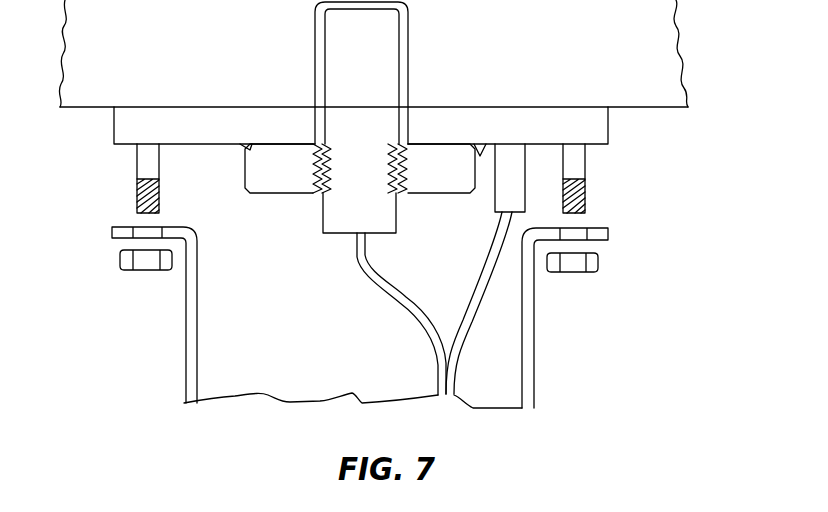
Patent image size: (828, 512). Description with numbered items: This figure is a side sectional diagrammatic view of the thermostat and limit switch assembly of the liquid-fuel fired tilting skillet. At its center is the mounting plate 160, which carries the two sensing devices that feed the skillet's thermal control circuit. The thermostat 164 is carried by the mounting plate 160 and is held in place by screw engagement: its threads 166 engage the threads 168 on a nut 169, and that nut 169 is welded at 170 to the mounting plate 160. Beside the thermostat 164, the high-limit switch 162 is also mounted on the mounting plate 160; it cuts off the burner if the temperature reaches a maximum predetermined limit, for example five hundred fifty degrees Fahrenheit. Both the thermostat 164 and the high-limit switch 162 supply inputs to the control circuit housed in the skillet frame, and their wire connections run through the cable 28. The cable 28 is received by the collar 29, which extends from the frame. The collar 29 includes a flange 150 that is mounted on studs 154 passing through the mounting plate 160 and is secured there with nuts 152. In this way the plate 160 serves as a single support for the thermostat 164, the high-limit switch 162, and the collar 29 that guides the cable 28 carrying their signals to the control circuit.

The cable 28 is at (437, 382).
The collar 29 is at (535, 383).
The flange 150 is at (610, 232).
The nuts 152 is at (118, 257).
The studs 154 is at (135, 186).
The mounting plate 160 is at (608, 126).
The high-limit switch 162 is at (512, 155).
The thermostat 164 is at (378, 45).
The threads 166 is at (347, 185).
The threads 168 is at (312, 173).
The nut 169 is at (245, 185).
The weld 170 is at (238, 148).